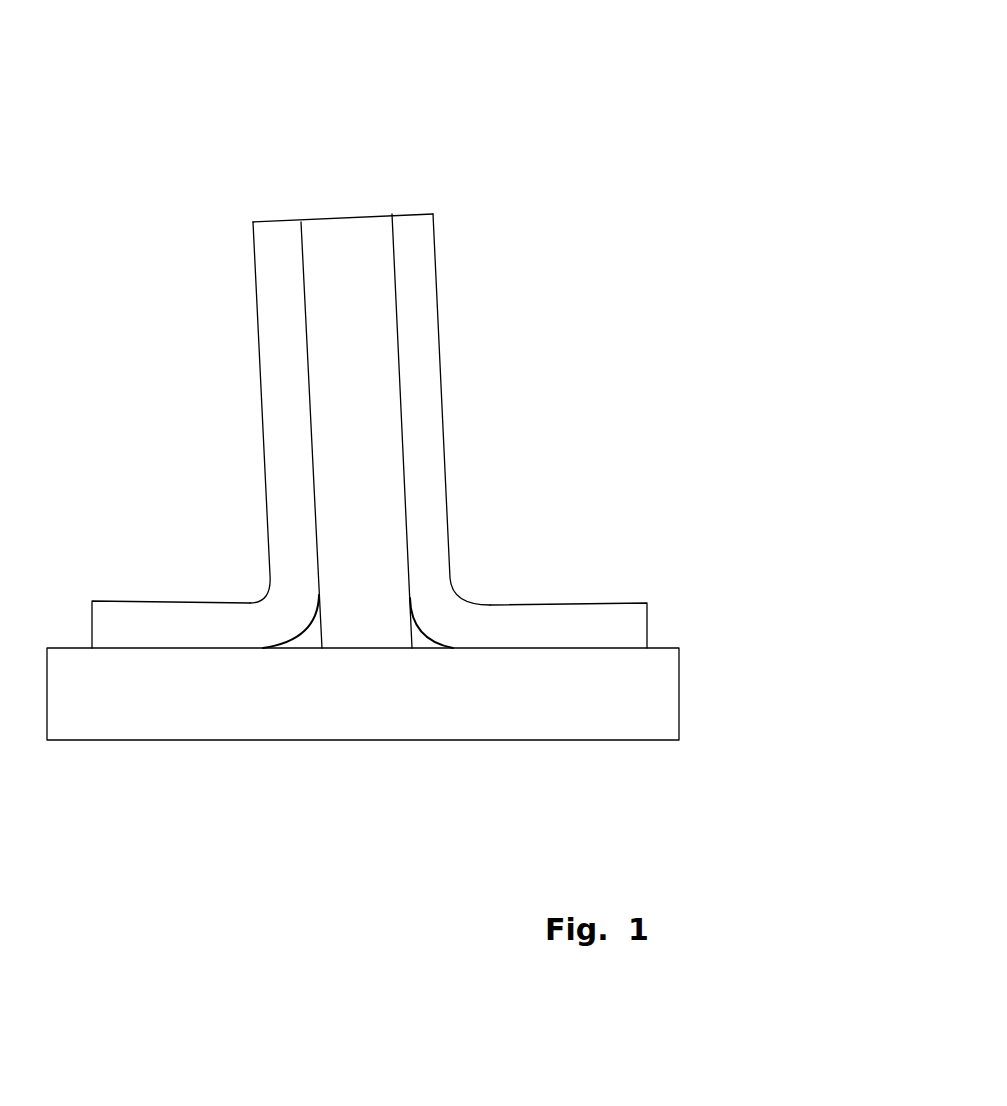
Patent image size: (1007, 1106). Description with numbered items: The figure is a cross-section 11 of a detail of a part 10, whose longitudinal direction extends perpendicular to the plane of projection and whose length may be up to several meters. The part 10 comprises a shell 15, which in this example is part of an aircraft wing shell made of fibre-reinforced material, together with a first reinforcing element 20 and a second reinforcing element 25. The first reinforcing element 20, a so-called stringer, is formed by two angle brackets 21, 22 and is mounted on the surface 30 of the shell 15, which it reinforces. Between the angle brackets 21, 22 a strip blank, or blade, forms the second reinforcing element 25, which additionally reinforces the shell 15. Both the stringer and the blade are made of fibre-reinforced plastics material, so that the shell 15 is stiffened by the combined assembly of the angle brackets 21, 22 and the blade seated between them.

The part 10 is at (550, 140).
The cross-section 11 is at (505, 470).
The shell 15 is at (679, 700).
The first reinforcing element 20 is at (231, 145).
The angle bracket 21 is at (441, 352).
The angle bracket 22 is at (262, 363).
The second reinforcing element 25 is at (321, 217).
The surface 30 is at (662, 647).